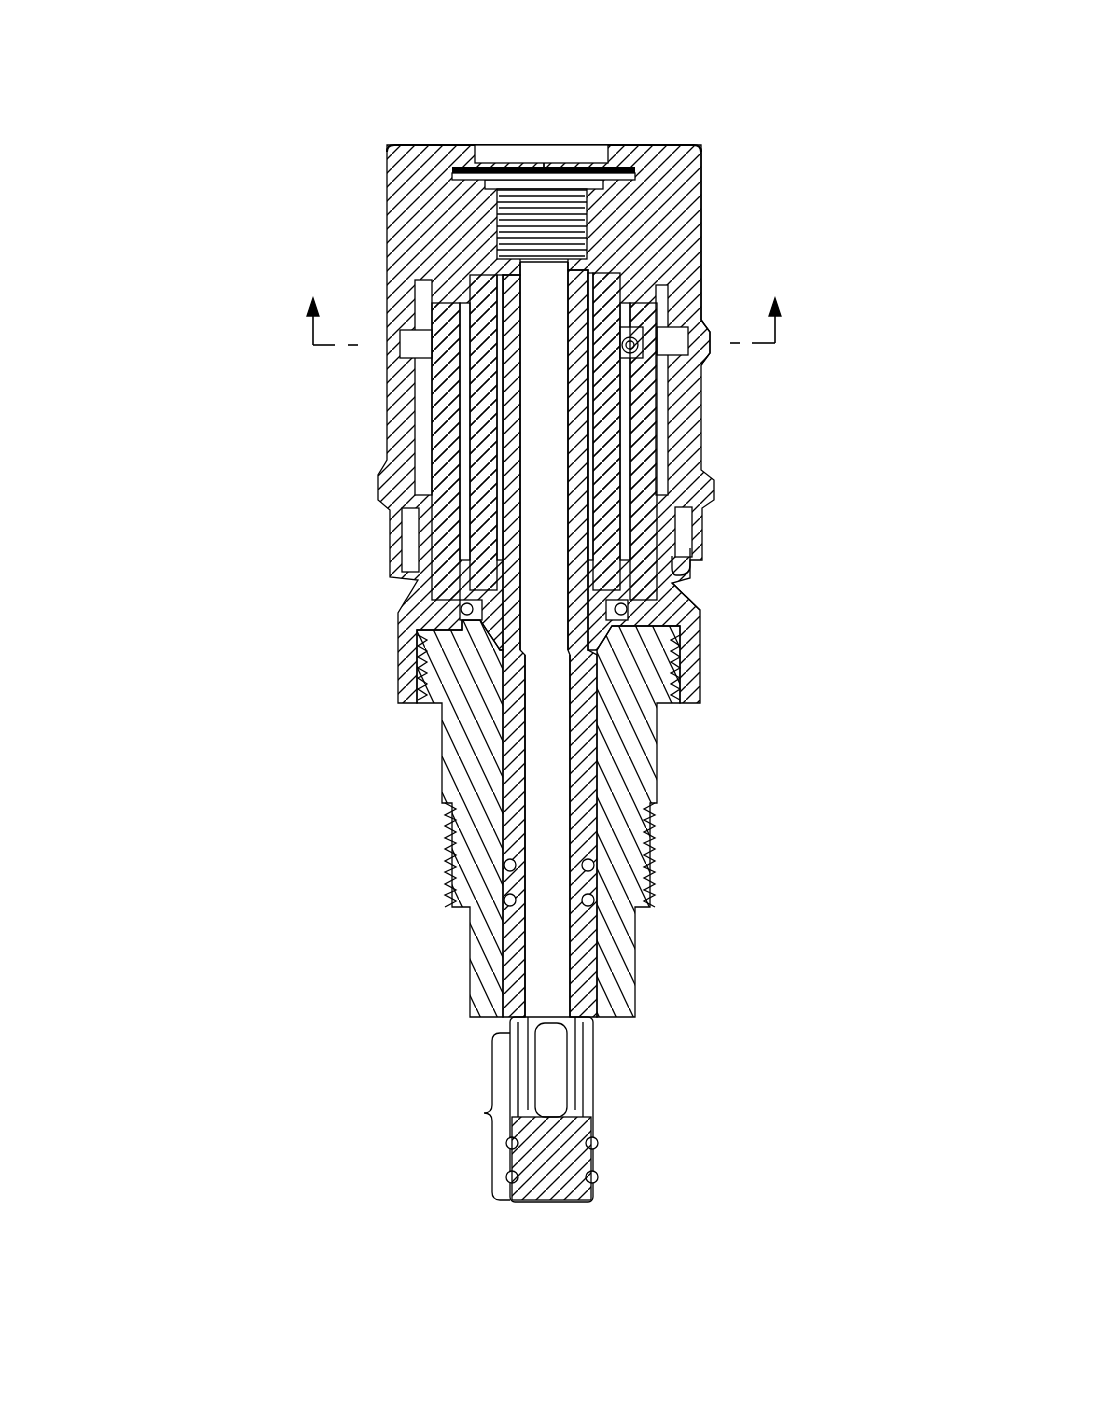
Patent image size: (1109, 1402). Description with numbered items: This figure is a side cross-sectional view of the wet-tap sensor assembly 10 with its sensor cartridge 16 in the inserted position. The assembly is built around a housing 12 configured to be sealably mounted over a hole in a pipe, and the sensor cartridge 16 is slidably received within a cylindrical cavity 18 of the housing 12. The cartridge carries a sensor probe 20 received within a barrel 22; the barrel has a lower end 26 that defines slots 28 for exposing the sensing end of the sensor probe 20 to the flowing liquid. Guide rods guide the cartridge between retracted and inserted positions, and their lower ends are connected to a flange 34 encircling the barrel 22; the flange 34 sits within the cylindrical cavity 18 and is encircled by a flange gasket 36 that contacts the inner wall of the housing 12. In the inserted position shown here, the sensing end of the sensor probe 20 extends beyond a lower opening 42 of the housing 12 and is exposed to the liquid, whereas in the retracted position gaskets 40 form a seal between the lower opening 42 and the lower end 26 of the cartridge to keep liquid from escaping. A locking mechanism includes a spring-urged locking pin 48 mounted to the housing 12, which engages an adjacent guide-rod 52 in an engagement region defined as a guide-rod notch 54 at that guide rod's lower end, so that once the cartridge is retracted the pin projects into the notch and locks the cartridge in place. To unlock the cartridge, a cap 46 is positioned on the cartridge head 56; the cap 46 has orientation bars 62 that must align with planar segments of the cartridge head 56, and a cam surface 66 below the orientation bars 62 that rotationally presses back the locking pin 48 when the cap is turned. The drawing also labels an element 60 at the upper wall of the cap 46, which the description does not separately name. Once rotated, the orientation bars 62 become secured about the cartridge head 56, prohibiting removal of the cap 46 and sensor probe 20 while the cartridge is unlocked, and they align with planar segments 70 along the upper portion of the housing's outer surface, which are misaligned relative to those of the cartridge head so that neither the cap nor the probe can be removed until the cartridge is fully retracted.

The wet-tap sensor assembly 10 is at (530, 676).
The housing 12 is at (664, 778).
The sensor cartridge 16 is at (520, 808).
The cylindrical cavity 18 is at (655, 620).
The sensor probe 20 is at (566, 1036).
The barrel 22 is at (590, 965).
The lower end 26 is at (488, 1115).
The slots 28 is at (585, 1196).
The flange 34 is at (420, 678).
The flange gasket 36 is at (462, 608).
The gaskets 40 is at (515, 1146).
The lower opening 42 is at (570, 1020).
The cap 46 is at (704, 262).
The locking pin 48 is at (638, 352).
The adjacent guide-rod 52 is at (660, 330).
The guide-rod notch 54 is at (630, 536).
The cartridge head 56 is at (445, 205).
The housing top wall 60 is at (690, 218).
The orientation bars 62 is at (400, 332).
The cam surface 66 is at (690, 578).
The planar segments 70 is at (432, 440).